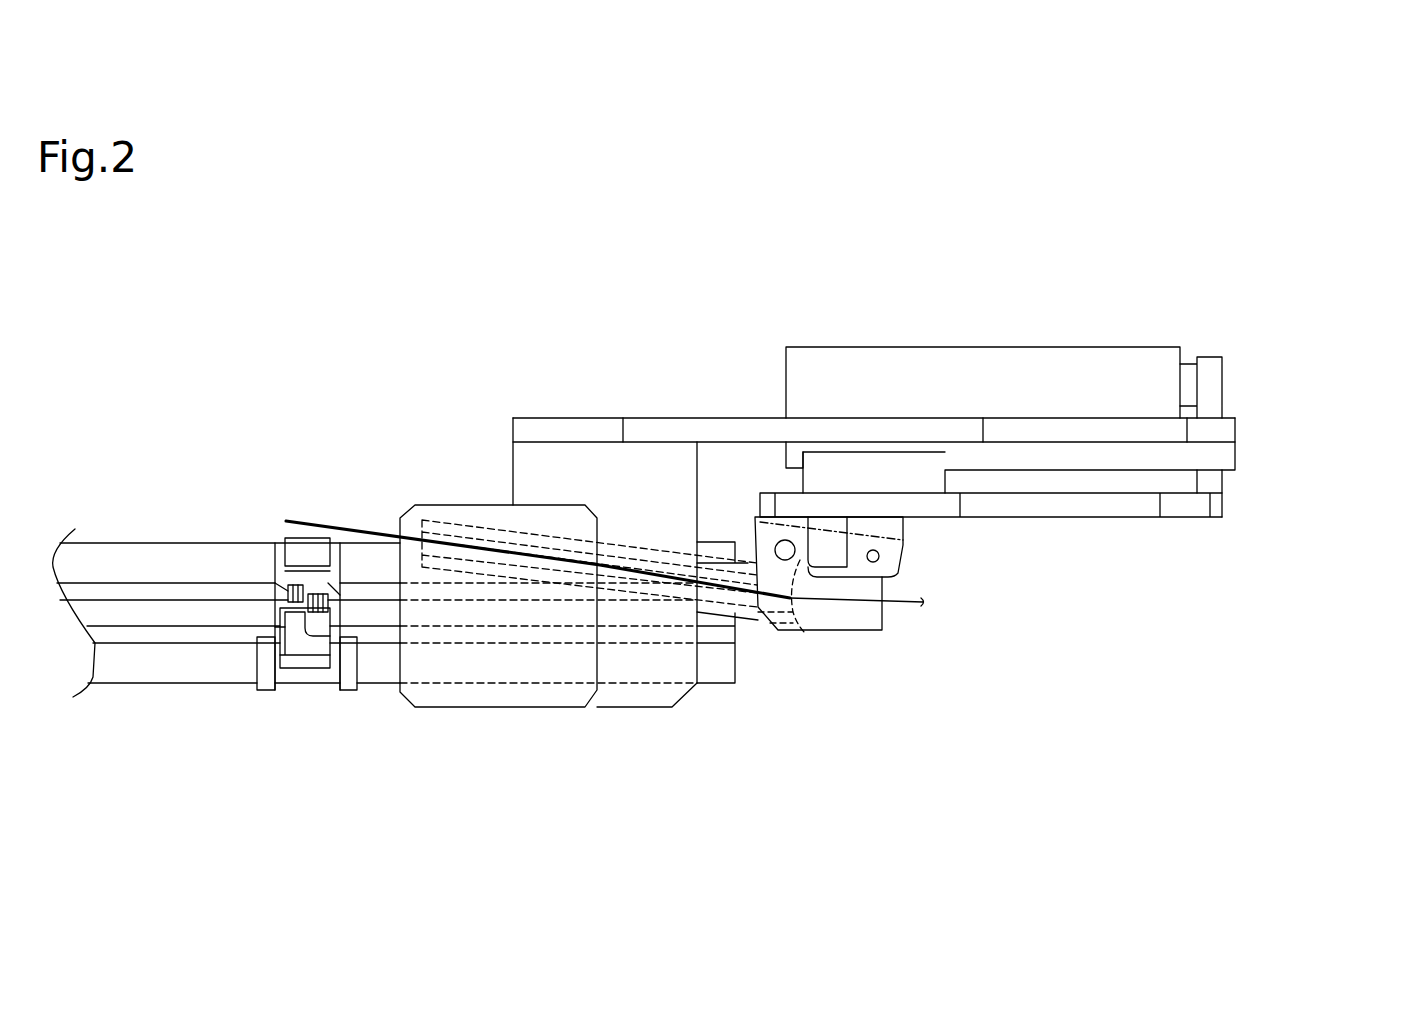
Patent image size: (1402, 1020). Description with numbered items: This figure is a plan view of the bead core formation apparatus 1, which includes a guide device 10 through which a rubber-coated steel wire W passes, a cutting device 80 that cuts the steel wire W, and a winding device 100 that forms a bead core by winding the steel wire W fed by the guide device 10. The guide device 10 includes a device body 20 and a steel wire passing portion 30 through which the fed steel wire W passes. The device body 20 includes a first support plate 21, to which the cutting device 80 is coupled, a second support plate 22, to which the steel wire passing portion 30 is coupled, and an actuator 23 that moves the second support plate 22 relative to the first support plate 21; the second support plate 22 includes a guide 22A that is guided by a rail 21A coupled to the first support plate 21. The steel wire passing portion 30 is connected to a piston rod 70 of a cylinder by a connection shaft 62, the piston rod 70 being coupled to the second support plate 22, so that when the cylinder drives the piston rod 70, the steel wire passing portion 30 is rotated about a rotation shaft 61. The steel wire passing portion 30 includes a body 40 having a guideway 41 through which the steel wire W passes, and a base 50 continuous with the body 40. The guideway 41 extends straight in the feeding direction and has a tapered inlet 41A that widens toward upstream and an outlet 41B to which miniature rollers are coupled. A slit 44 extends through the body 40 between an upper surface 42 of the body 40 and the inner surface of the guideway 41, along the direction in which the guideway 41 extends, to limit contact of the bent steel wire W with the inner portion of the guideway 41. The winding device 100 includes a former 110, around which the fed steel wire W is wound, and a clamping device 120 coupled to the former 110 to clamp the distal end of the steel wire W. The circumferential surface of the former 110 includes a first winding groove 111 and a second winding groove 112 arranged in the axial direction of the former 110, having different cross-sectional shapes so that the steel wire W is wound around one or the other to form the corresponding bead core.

The bead core formation apparatus 1 is at (1173, 310).
The guide device 10 is at (943, 668).
The device body 20 is at (1312, 365).
The first support plate 21 is at (1228, 432).
The rail 21A is at (1028, 457).
The second support plate 22 is at (1215, 505).
The guide 22A is at (893, 462).
The actuator 23 is at (1168, 387).
The steel wire passing portion 30 is at (750, 613).
The body 40 is at (557, 560).
The guideway 41 is at (638, 590).
The inlet 41A is at (805, 633).
The outlet 41B is at (420, 520).
The upper surface 42 is at (478, 575).
The slit 44 is at (557, 540).
The base 50 is at (832, 527).
The rotation shaft 61 is at (783, 540).
The connection shaft 62 is at (879, 557).
The piston rod 70 is at (903, 532).
The cutting device 80 is at (660, 453).
The winding device 100 is at (237, 390).
The former 110 is at (231, 543).
The first winding groove 111 is at (152, 590).
The second winding groove 112 is at (127, 633).
The clamping device 120 is at (303, 547).
The steel wire W is at (902, 608).